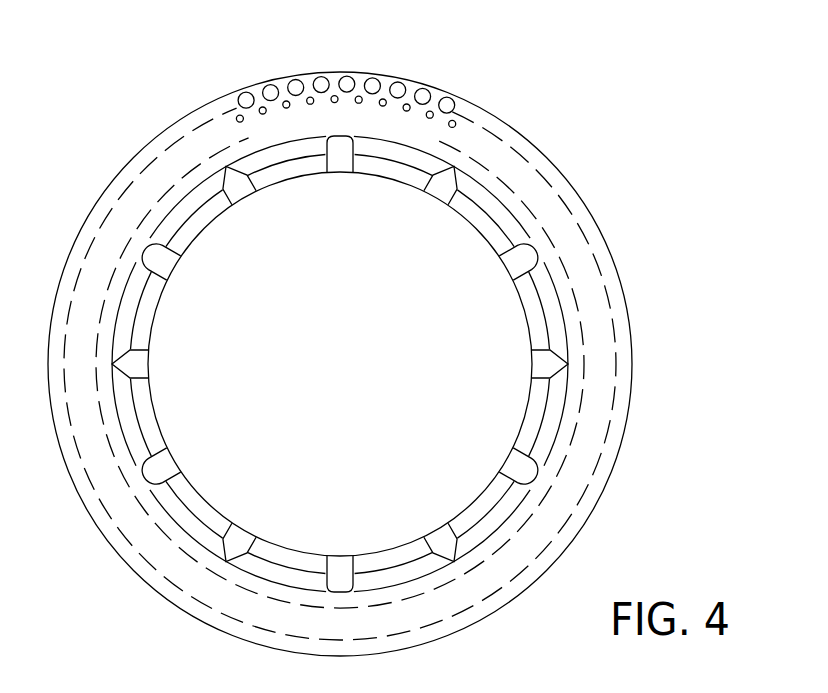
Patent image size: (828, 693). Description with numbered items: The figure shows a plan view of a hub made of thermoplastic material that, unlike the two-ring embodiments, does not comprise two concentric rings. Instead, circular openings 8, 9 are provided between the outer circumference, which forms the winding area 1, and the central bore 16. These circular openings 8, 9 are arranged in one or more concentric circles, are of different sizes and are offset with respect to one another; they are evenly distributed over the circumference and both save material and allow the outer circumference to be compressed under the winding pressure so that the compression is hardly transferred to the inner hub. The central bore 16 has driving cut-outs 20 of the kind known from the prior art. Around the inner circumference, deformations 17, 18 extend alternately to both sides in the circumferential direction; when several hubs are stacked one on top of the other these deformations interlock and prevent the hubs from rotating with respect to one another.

The winding area 1 is at (596, 211).
The circular openings 8 is at (446, 97).
The circular openings 9 is at (357, 96).
The central bore 16 is at (456, 356).
The deformations 17 is at (521, 445).
The deformations 18 is at (365, 563).
The driving cut-outs 20 is at (168, 247).